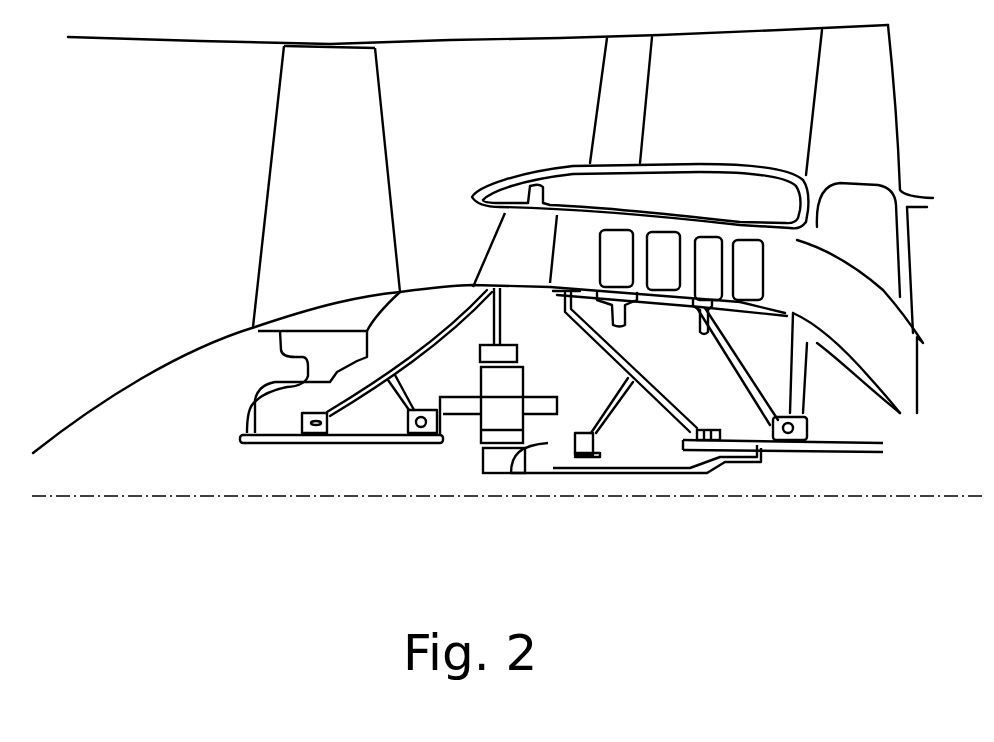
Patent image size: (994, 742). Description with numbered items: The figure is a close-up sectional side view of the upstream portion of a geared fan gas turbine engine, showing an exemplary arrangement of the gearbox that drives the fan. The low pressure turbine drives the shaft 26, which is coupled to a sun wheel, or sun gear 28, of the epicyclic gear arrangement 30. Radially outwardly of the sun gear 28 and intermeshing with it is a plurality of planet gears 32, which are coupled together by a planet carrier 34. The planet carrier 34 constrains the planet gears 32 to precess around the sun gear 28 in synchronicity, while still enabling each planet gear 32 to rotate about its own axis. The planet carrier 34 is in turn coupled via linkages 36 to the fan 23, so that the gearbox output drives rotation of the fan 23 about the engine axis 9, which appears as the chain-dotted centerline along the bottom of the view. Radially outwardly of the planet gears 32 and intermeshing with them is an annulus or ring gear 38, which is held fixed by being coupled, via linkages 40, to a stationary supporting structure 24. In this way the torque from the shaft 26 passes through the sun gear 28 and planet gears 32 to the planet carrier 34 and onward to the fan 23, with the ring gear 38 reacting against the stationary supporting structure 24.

The engine axis 9 is at (247, 497).
The fan 23 is at (288, 188).
The stationary supporting structure 24 is at (510, 245).
The shaft 26 is at (670, 475).
The sun gear 28 is at (503, 462).
The epicyclic gear arrangement 30 is at (478, 440).
The planet gears 32 is at (482, 432).
The planet carrier 34 is at (545, 447).
The linkages 36 is at (467, 437).
The ring gear 38 is at (478, 352).
The linkages 40 is at (503, 330).